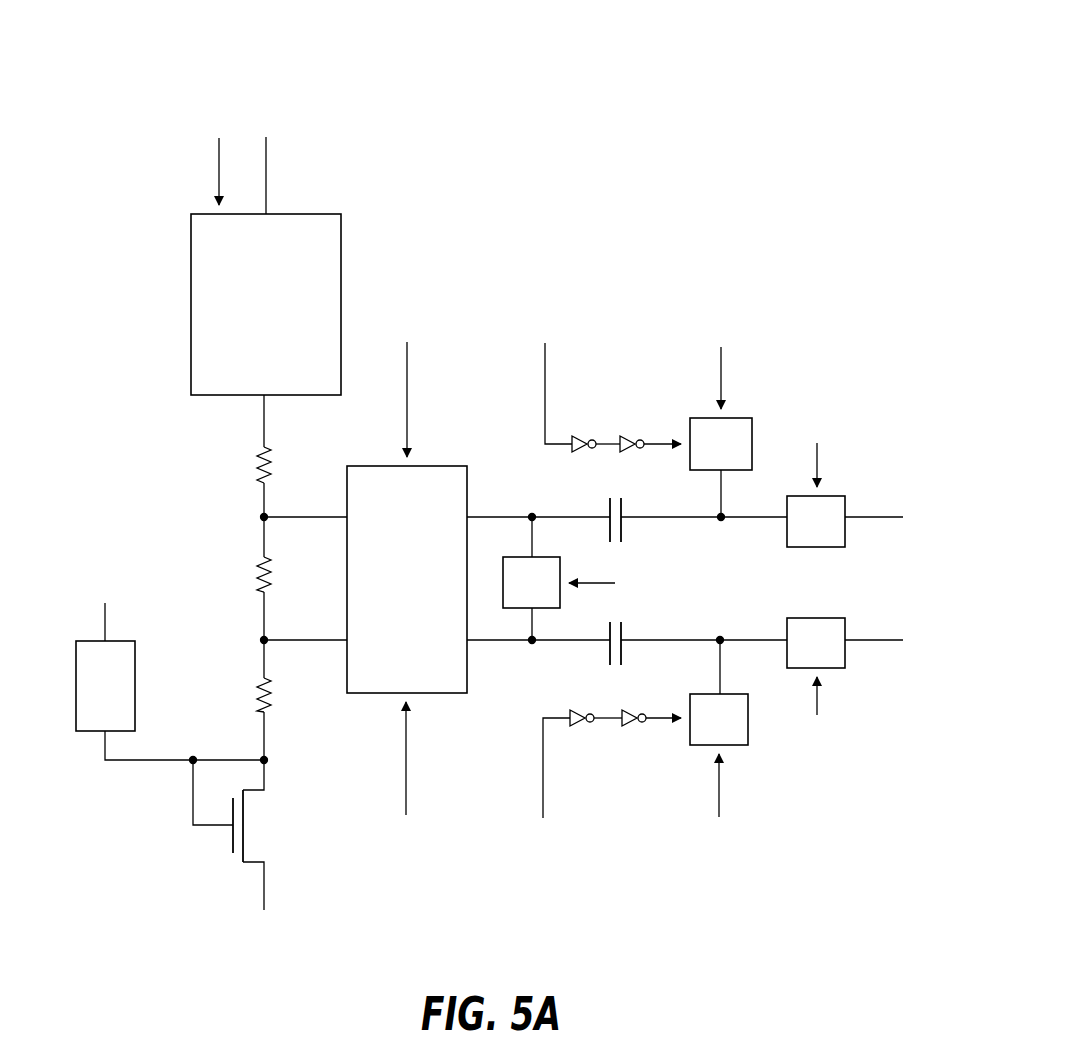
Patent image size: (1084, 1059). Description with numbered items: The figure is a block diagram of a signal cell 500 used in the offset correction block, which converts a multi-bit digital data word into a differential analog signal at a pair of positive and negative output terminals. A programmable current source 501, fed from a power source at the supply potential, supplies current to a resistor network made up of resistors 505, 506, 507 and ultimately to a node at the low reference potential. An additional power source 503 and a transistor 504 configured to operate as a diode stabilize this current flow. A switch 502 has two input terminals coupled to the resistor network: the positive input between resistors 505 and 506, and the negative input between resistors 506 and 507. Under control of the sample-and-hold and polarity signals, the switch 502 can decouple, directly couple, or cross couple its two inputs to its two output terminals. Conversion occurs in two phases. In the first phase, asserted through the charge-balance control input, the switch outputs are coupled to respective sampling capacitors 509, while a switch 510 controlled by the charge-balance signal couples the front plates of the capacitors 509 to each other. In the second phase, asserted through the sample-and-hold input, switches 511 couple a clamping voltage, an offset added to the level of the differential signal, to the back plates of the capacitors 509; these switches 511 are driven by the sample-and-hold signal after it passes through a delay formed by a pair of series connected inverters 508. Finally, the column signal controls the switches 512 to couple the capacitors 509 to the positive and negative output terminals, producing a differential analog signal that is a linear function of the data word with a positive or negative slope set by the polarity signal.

The signal cell 500 is at (322, 62).
The programmable current source 501 is at (243, 341).
The switch 502 is at (430, 591).
The additional power source 503 is at (127, 694).
The transistor 504 is at (253, 834).
The resistor 505 is at (258, 455).
The resistor 506 is at (258, 565).
The resistor 507 is at (258, 685).
The inverter 508 is at (583, 436).
The sampling capacitor 509 is at (623, 504).
The switch 510 is at (553, 595).
The switch 511 is at (743, 456).
The switch 512 is at (838, 534).